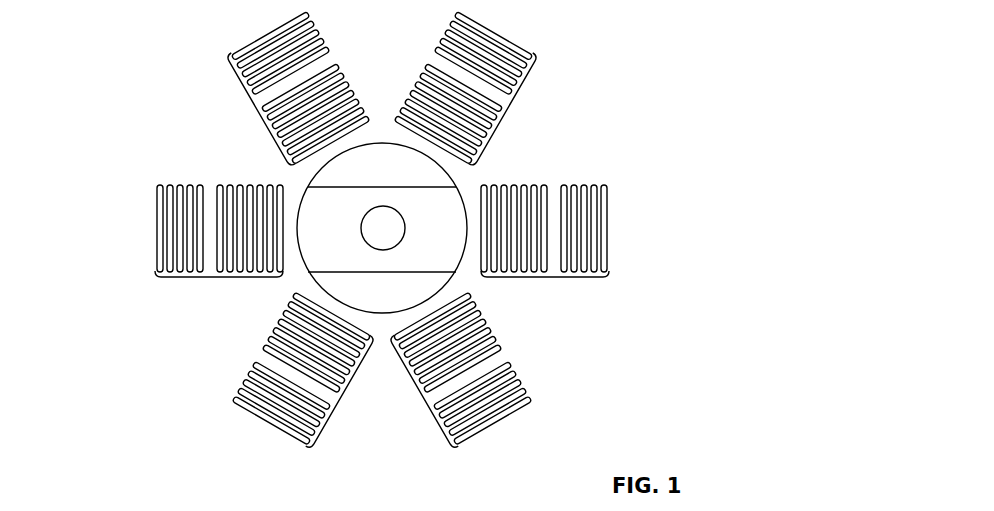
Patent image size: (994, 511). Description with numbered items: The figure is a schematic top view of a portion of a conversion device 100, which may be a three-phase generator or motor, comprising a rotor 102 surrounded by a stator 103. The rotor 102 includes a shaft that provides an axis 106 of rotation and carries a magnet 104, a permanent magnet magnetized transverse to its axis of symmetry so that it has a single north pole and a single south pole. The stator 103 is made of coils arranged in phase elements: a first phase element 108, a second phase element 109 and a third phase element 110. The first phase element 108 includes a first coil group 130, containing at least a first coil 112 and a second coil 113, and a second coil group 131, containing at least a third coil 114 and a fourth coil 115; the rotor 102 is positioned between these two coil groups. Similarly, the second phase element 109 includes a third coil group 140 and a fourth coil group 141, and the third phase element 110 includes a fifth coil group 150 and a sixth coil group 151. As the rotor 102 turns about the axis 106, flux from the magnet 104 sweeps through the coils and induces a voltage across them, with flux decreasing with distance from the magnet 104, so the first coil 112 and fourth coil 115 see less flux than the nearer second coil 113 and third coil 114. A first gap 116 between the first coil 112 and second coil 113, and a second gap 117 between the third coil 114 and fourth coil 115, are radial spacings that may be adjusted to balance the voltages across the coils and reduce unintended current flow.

The conversion device 100 is at (155, 50).
The rotor 102 is at (373, 143).
The stator 103 is at (593, 27).
The magnet 104 is at (283, 277).
The axis 106 is at (383, 228).
The first phase element 108 is at (617, 153).
The second phase element 109 is at (518, 446).
The third phase element 110 is at (255, 441).
The first coil 112 is at (609, 228).
The second coil 113 is at (525, 183).
The third coil 114 is at (250, 183).
The fourth coil 115 is at (155, 227).
The first gap 116 is at (546, 183).
The second gap 117 is at (217, 183).
The first coil group 130 is at (543, 279).
The second coil group 131 is at (220, 279).
The third coil group 140 is at (419, 394).
The fourth coil group 141 is at (258, 117).
The fifth coil group 150 is at (346, 394).
The sixth coil group 151 is at (502, 116).